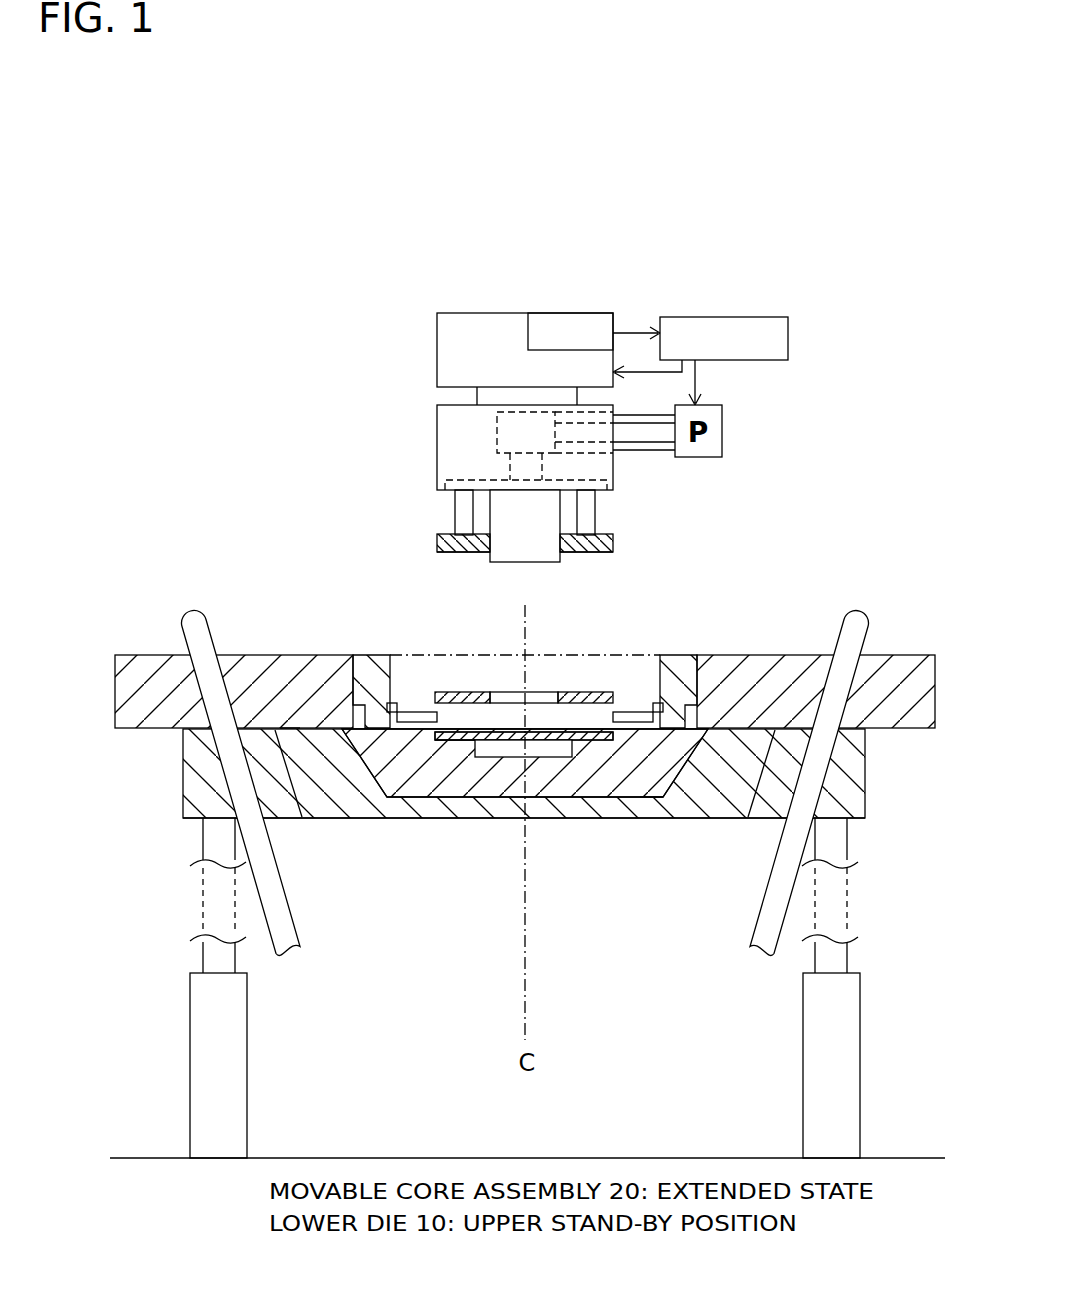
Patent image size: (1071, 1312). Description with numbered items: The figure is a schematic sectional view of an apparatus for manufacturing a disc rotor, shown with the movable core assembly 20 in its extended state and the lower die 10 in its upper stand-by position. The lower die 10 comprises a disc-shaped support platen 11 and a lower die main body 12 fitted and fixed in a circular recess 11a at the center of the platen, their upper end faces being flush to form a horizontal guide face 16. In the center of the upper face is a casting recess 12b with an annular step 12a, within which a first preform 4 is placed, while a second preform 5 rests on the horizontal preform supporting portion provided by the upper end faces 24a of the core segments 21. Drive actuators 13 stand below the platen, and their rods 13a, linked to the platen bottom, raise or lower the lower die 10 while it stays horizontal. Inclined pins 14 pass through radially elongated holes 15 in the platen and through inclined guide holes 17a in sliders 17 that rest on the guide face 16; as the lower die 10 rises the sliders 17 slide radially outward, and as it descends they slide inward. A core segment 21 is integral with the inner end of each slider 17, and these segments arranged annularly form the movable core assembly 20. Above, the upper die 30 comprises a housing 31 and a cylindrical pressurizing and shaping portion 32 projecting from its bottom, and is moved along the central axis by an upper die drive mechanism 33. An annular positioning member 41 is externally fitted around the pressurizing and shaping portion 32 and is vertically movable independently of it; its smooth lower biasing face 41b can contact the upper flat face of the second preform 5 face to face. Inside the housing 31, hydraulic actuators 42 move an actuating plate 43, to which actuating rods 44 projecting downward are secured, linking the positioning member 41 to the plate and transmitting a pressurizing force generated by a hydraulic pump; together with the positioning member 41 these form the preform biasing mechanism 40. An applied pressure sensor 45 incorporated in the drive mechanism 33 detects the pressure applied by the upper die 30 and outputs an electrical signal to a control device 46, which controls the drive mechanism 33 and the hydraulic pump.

The first preform 4 is at (537, 737).
The second preform 5 is at (503, 693).
The lower die 10 is at (168, 778).
The support platen 11 is at (632, 820).
The recess 11a is at (583, 783).
The lower die main body 12 is at (408, 787).
The annular step 12a is at (455, 740).
The casting recess 12b is at (490, 752).
The drive actuator 13 is at (190, 1063).
The rod 13a is at (203, 845).
The inclined pin 14 is at (198, 627).
The elongated hole 15 is at (290, 800).
The horizontal guide face 16 is at (290, 727).
The slider 17 is at (268, 655).
The inclined guide hole 17a is at (188, 652).
The movable core assembly 20 is at (357, 641).
The core segment 21 is at (373, 655).
The upper end face 24a is at (393, 702).
The upper die 30 is at (426, 387).
The housing 31 is at (613, 468).
The pressurizing and shaping portion 32 is at (533, 553).
The upper die drive mechanism 33 is at (477, 325).
The preform biasing mechanism 40 is at (425, 548).
The positioning member 41 is at (613, 545).
The biasing face 41b is at (587, 552).
The hydraulic actuator 42 is at (497, 440).
The actuating plate 43 is at (455, 478).
The actuating rod 44 is at (463, 510).
The applied pressure sensor 45 is at (566, 312).
The control device 46 is at (725, 317).